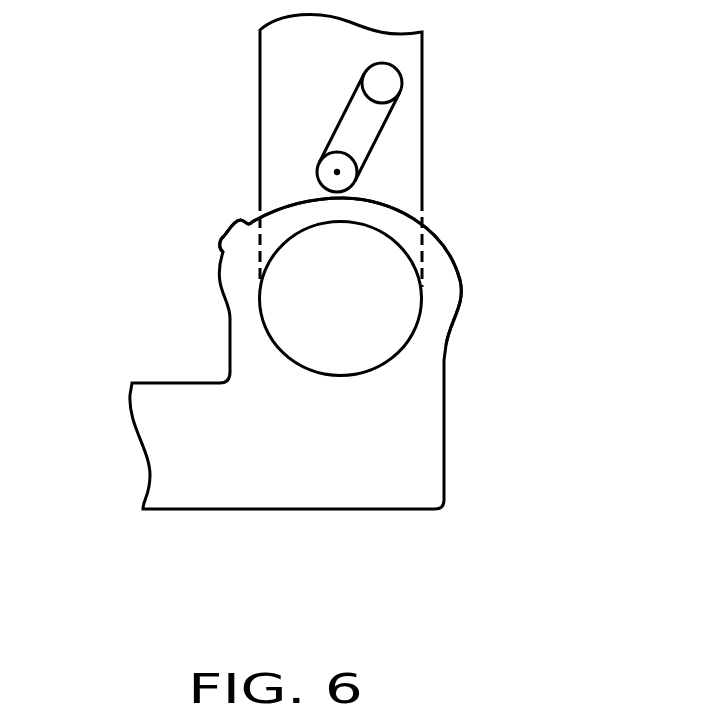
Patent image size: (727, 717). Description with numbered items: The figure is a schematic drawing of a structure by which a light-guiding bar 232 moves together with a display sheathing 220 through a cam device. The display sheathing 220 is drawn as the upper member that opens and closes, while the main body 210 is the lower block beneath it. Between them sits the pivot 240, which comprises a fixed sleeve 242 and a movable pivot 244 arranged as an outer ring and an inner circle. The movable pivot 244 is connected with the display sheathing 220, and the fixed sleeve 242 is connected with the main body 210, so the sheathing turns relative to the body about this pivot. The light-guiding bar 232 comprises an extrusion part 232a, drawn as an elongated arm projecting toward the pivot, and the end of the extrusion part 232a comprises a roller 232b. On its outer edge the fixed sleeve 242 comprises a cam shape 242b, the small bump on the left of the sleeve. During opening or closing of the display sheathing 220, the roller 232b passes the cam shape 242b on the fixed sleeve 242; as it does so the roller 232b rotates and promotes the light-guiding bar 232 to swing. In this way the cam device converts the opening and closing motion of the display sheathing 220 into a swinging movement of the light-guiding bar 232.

The main body 210 is at (143, 402).
The display sheathing 220 is at (275, 69).
The light-guiding bar 232 is at (427, 121).
The extrusion part 232a is at (363, 127).
The roller 232b is at (348, 165).
The pivot 240 is at (458, 287).
The fixed sleeve 242 is at (447, 260).
The cam shape 242b is at (221, 236).
The movable pivot 244 is at (395, 313).